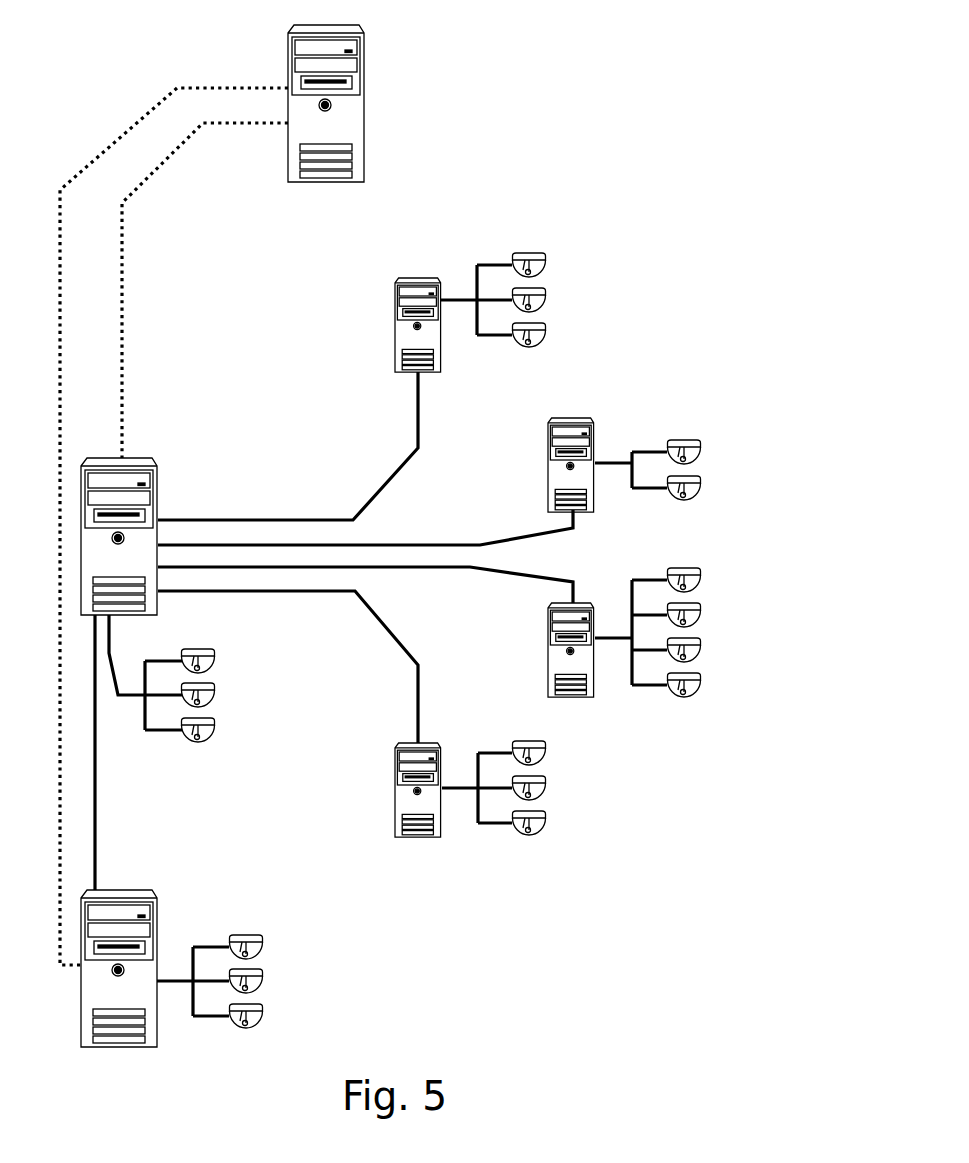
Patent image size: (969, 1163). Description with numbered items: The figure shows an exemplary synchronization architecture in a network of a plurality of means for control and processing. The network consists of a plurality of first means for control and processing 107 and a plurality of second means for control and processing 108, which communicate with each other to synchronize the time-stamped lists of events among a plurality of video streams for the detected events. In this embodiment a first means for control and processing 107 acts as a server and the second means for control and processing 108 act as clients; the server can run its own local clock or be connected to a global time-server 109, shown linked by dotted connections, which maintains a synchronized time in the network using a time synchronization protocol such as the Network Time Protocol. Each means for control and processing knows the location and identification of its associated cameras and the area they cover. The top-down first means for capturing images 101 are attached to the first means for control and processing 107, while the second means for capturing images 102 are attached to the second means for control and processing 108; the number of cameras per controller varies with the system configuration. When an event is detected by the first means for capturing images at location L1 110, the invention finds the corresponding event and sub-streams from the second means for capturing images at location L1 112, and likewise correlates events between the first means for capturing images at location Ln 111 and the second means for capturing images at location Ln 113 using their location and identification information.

The first means for capturing images 101 is at (261, 821).
The second means for capturing images 102 is at (618, 548).
The first means for control and processing 107 is at (133, 463).
The second means for control and processing 108 is at (418, 278).
The time-server 109 is at (365, 100).
The first means for capturing images at location L1 110 is at (193, 650).
The first means for capturing images at location Ln 111 is at (193, 741).
The second means for capturing images at location L1 112 is at (533, 256).
The second means for capturing images at location Ln 113 is at (531, 835).